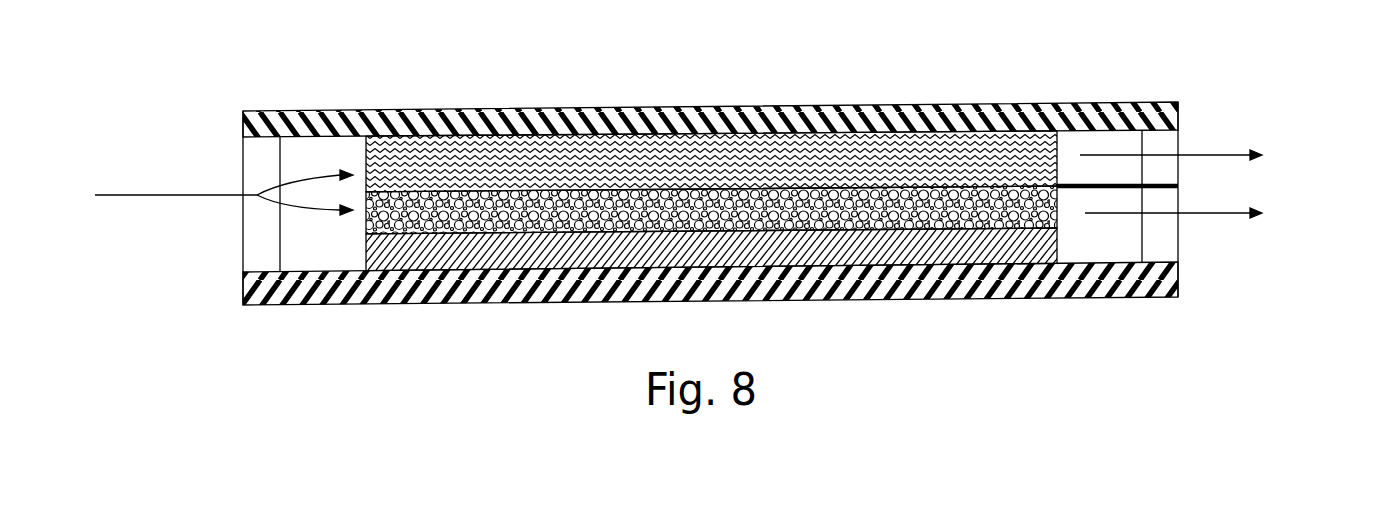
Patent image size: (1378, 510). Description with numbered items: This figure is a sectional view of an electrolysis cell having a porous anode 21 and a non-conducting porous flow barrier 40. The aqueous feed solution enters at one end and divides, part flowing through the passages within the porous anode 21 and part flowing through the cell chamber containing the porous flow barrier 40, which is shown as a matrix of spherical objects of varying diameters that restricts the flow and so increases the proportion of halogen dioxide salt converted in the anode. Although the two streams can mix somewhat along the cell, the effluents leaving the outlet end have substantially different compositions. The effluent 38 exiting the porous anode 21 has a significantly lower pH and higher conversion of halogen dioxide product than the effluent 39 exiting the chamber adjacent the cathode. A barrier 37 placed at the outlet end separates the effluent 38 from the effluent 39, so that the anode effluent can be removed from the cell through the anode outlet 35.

The porous anode 21 is at (588, 153).
The porous flow barrier 40 is at (727, 207).
The anode outlet 35 is at (1082, 145).
The barrier 37 is at (1180, 186).
The effluent exiting the porous anode 38 is at (1187, 142).
The effluent exiting the cell chamber 39 is at (1190, 223).